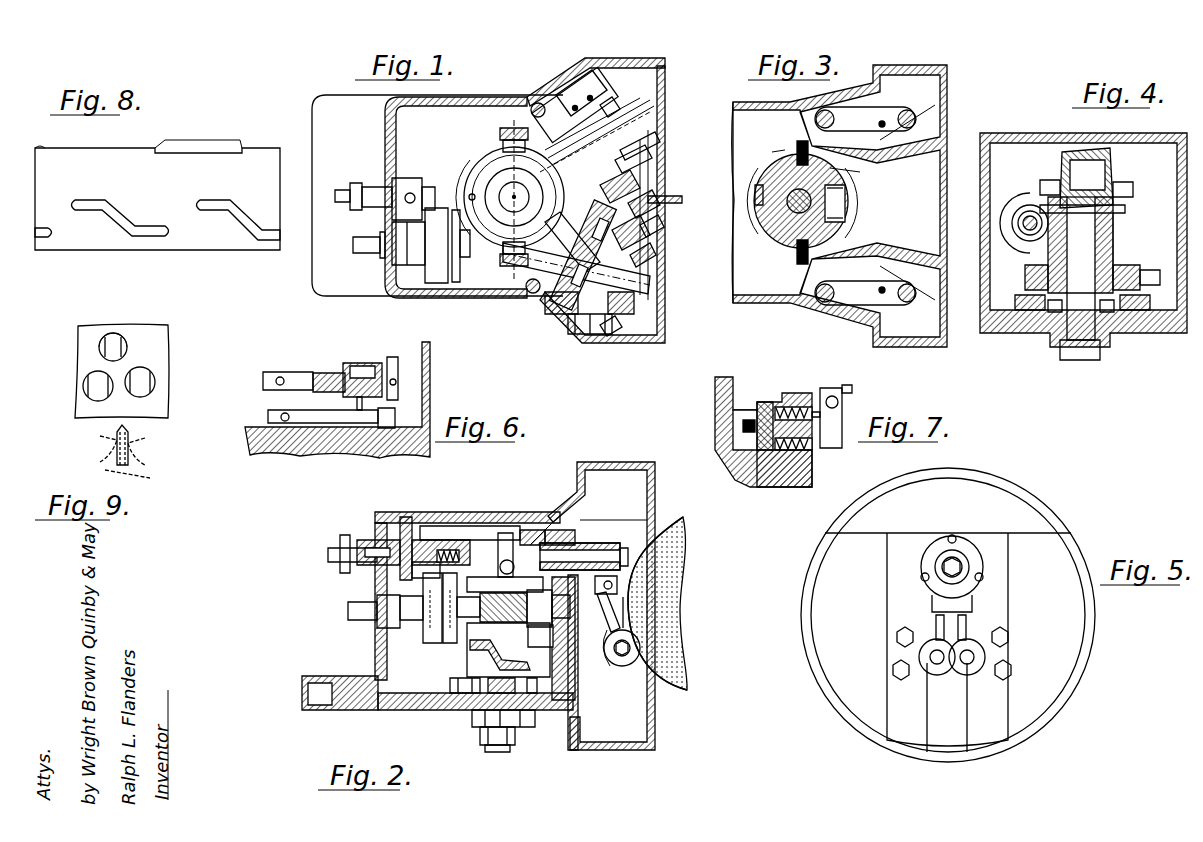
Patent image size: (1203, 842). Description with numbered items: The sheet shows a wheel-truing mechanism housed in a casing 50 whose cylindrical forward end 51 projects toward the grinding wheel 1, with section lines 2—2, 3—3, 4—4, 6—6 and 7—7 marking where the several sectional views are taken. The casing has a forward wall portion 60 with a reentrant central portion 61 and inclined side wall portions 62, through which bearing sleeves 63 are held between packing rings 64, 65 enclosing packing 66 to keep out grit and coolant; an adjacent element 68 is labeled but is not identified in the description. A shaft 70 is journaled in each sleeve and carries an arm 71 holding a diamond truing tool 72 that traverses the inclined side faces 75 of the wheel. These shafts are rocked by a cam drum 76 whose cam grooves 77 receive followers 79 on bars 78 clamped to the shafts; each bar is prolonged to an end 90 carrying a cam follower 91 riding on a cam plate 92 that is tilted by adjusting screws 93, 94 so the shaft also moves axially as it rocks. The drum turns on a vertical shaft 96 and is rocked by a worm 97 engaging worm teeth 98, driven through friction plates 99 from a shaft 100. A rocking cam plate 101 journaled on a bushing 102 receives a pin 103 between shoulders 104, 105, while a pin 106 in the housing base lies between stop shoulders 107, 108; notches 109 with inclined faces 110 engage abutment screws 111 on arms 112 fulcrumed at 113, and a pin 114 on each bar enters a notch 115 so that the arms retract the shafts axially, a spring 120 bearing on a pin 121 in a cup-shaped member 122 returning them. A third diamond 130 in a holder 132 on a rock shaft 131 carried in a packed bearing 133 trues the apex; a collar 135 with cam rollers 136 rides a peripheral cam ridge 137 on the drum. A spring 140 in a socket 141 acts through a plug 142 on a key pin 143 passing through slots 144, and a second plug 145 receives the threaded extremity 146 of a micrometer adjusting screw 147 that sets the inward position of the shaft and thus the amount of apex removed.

In FIG. 2, the grinding wheel 1 is at (557, 520).
In FIG. 9, the grinding wheel 1 is at (136, 478).
In FIG. 1, the section line 2— 2 is at (335, 196).
In FIG. 2, the section line 3— 3 is at (660, 675).
In FIG. 1, the section line 4— 4 is at (515, 118).
In FIG. 2, the section line 4— 4 is at (507, 573).
In FIG. 1, the section line 6— 6 is at (495, 255).
In FIG. 1, the section line 7— 7 is at (655, 230).
In FIG. 1, the casing 50 is at (438, 96).
In FIG. 1, the cylindrical forward end of casing 51 is at (642, 60).
In FIG. 2, the cylindrical forward end of casing 51 is at (628, 462).
In FIG. 3, the cylindrical forward end of casing 51 is at (935, 65).
In FIG. 5, the cylindrical forward end of casing 51 is at (1005, 487).
In FIG. 1, the forward wall portion 60 is at (655, 125).
In FIG. 5, the forward wall portion 60 is at (830, 680).
In FIG. 1, the reentrant central portion 61 is at (585, 150).
In FIG. 1, the inclined side wall portions 62 is at (645, 150).
In FIG. 5, the inclined side wall portions 62 is at (890, 583).
In FIG. 7, the inclined side wall portions 62 is at (795, 488).
In FIG. 1, the bearing sleeves 63 is at (640, 282).
In FIG. 1, the packing ring 64 is at (662, 200).
In FIG. 1, the packing ring 65 is at (583, 255).
In FIG. 1, the packing 66 is at (665, 228).
In FIG. 1, the lock nut 68 is at (658, 252).
In FIG. 1, the shaft 70 is at (585, 330).
In FIG. 6, the shaft 70 is at (365, 363).
In FIG. 1, the arm 71 is at (660, 175).
In FIG. 2, the arm 71 is at (607, 642).
In FIG. 5, the arm 71 is at (920, 690).
In FIG. 7, the arm 71 is at (843, 420).
In FIG. 5, the diamond truing tool 72 is at (930, 620).
In FIG. 7, the diamond truing tool 72 is at (850, 386).
In FIG. 9, the diamond truing tool 72 is at (83, 392).
In FIG. 9, the inclined side faces 75 is at (102, 440).
In FIG. 1, the cam drum 76 is at (503, 147).
In FIG. 2, the cam drum 76 is at (525, 728).
In FIG. 8, the cam drum 76 is at (157, 198).
In FIG. 2, the cam grooves 77 is at (508, 650).
In FIG. 4, the cam grooves 77 is at (1116, 240).
In FIG. 8, the cam grooves 77 is at (52, 225).
In FIG. 1, the bars 78 is at (515, 140).
In FIG. 4, the bars 78 is at (1130, 266).
In FIG. 6, the bars 78 is at (295, 372).
In FIG. 1, the followers 79 is at (530, 112).
In FIG. 4, the followers 79 is at (1050, 313).
In FIG. 1, the prolonged end of bar 90 is at (592, 104).
In FIG. 7, the cam follower 91 is at (748, 420).
In FIG. 6, the cam plate 92 is at (395, 357).
In FIG. 7, the cam plate 92 is at (766, 402).
In FIG. 7, the adjusting screw 93 is at (812, 462).
In FIG. 7, the adjusting screw 94 is at (805, 393).
In FIG. 1, the vertical shaft 96 is at (505, 196).
In FIG. 2, the vertical shaft 96 is at (505, 746).
In FIG. 3, the vertical shaft 96 is at (802, 201).
In FIG. 4, the vertical shaft 96 is at (1080, 278).
In FIG. 2, the worm 97 is at (480, 640).
In FIG. 4, the worm teeth 98 is at (1030, 195).
In FIG. 2, the friction plates 99 is at (425, 640).
In FIG. 2, the shaft 100 is at (360, 622).
In FIG. 1, the rocking cam plate 101 is at (690, 300).
In FIG. 2, the rocking cam plate 101 is at (478, 710).
In FIG. 3, the rocking cam plate 101 is at (718, 206).
In FIG. 4, the rocking cam plate 101 is at (1040, 335).
In FIG. 4, the bushing 102 is at (1068, 330).
In FIG. 1, the pin 103 is at (516, 205).
In FIG. 2, the pin 103 is at (600, 680).
In FIG. 3, the pin 103 is at (833, 204).
In FIG. 1, the shoulder 104 is at (585, 140).
In FIG. 3, the shoulder 104 is at (853, 190).
In FIG. 1, the shoulder 105 is at (622, 199).
In FIG. 3, the shoulder 105 is at (853, 228).
In FIG. 2, the second pin 106 is at (445, 710).
In FIG. 3, the second pin 106 is at (760, 190).
In FIG. 3, the shoulder 107 is at (770, 235).
In FIG. 1, the shoulder 108 is at (475, 170).
In FIG. 3, the shoulder 108 is at (785, 158).
In FIG. 3, the notches 109 is at (760, 272).
In FIG. 3, the inclined faces 110 is at (810, 150).
In FIG. 3, the abutment screws 111 is at (816, 119).
In FIG. 4, the abutment screws 111 is at (1161, 282).
In FIG. 3, the arms 112 is at (885, 165).
In FIG. 4, the arms 112 is at (1015, 325).
In FIG. 6, the arms 112 is at (320, 440).
In FIG. 3, the fulcrum 113 is at (916, 119).
In FIG. 3, the pin 114 is at (887, 118).
In FIG. 6, the pin 114 is at (345, 411).
In FIG. 3, the notch 115 is at (878, 290).
In FIG. 1, the spring 120 is at (550, 312).
In FIG. 1, the pin 121 is at (578, 334).
In FIG. 1, the cup-shaped member 122 is at (612, 334).
In FIG. 2, the third diamond 130 is at (612, 610).
In FIG. 9, the third diamond 130 is at (115, 333).
In FIG. 2, the rock shaft 131 is at (595, 543).
In FIG. 4, the rock shaft 131 is at (1083, 150).
In FIG. 2, the holder 132 is at (617, 580).
In FIG. 5, the holder 132 is at (968, 565).
In FIG. 2, the packed bearing 133 is at (570, 530).
In FIG. 2, the collar 135 is at (525, 530).
In FIG. 4, the collar 135 is at (1105, 160).
In FIG. 2, the cam rollers 136 is at (512, 545).
In FIG. 4, the cam rollers 136 is at (1050, 180).
In FIG. 2, the peripheral cam ridge 137 is at (505, 571).
In FIG. 4, the peripheral cam ridge 137 is at (1125, 210).
In FIG. 8, the peripheral cam ridge 137 is at (240, 146).
In FIG. 2, the spring 140 is at (453, 526).
In FIG. 2, the socket 141 is at (462, 545).
In FIG. 2, the plug 142 is at (430, 540).
In FIG. 2, the key pin 143 is at (412, 575).
In FIG. 2, the slots 144 is at (400, 525).
In FIG. 2, the second plug 145 is at (392, 540).
In FIG. 2, the threaded extremity 146 is at (340, 562).
In FIG. 2, the micrometer adjusting screw 147 is at (328, 553).